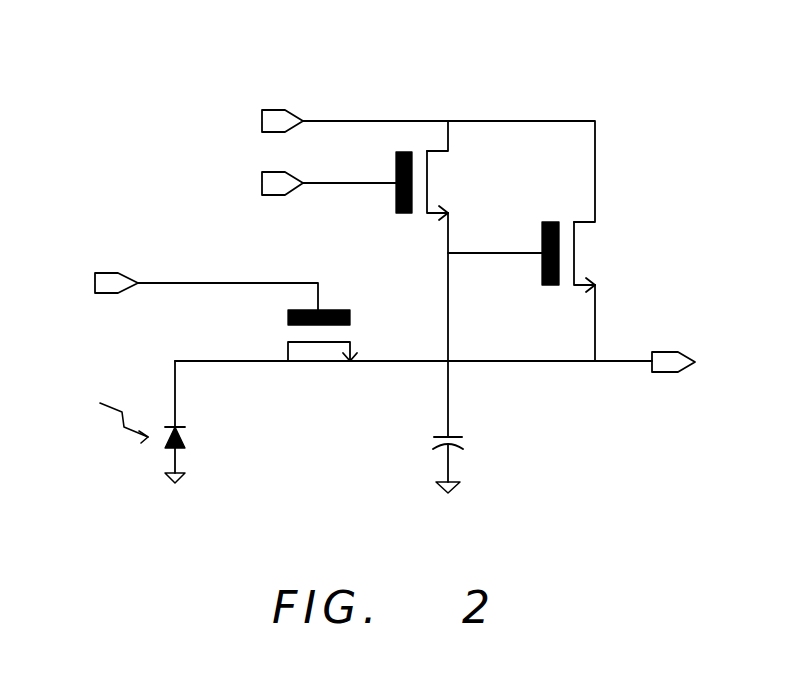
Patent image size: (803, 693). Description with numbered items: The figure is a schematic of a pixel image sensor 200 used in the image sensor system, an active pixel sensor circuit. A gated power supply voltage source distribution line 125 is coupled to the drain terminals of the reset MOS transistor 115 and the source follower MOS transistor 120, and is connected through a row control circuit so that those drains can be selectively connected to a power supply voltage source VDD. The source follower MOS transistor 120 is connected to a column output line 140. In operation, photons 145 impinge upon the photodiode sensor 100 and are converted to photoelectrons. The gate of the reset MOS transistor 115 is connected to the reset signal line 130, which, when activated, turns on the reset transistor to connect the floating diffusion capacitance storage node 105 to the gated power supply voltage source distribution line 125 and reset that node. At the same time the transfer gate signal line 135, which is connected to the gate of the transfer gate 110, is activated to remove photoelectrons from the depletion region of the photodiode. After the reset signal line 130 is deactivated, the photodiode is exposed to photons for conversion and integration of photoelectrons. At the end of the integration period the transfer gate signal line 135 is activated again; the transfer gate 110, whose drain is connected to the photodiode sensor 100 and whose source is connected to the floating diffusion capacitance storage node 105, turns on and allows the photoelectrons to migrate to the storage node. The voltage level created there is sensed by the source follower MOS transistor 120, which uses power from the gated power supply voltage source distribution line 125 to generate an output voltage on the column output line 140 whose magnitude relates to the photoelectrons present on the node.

The pixel image sensor 200 is at (637, 87).
The gated power supply voltage source distribution line 125 is at (273, 110).
The reset signal line 130 is at (273, 172).
The transfer gate signal line 135 is at (107, 273).
The column output line 140 is at (665, 352).
The reset MOS transistor 115 is at (440, 218).
The source follower MOS transistor 120 is at (578, 287).
The transfer gate 110 is at (352, 352).
The photodiode sensor 100 is at (178, 446).
The floating diffusion capacitance storage node 105 is at (436, 437).
The photons 145 is at (100, 403).